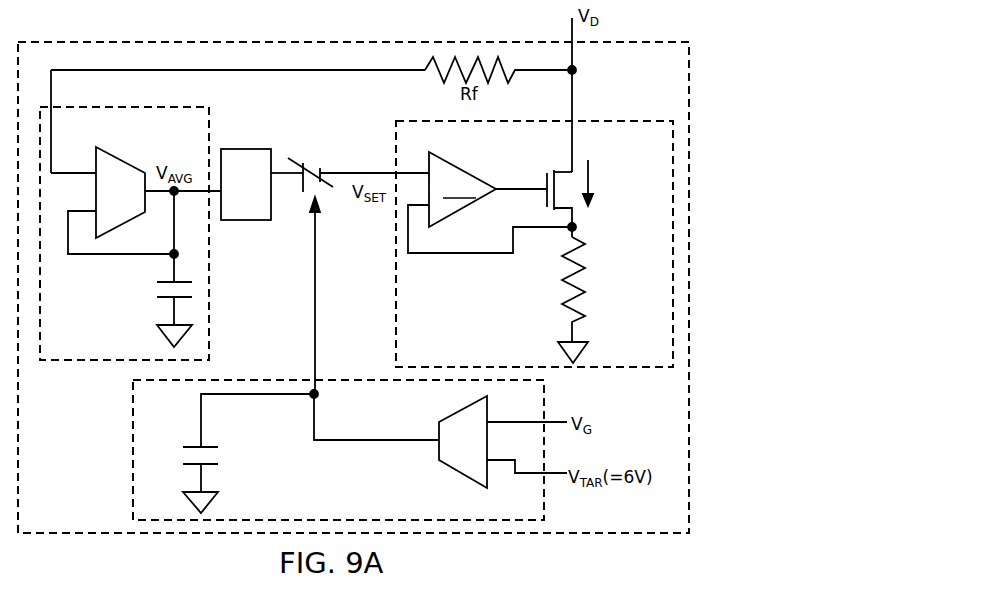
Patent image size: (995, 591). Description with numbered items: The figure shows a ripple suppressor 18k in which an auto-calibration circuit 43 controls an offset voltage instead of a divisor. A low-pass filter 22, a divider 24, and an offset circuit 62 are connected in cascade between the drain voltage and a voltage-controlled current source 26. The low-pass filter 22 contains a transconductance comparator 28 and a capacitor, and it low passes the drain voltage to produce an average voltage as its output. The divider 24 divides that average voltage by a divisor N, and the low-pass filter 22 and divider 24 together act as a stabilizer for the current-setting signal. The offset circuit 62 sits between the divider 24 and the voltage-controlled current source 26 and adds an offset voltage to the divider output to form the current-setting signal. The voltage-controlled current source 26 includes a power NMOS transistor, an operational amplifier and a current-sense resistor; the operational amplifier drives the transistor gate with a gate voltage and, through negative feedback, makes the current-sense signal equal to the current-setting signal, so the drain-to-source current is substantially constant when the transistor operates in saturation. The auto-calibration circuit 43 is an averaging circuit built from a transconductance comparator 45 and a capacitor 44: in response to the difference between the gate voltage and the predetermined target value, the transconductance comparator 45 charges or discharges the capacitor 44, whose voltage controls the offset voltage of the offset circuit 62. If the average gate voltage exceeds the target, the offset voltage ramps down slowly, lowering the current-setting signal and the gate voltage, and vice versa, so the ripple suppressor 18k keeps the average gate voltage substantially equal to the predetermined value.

The ripple suppressor 18k is at (666, 73).
The low-pass filter 22 is at (189, 137).
The divider 24 is at (254, 208).
The voltage-controlled current source 26 is at (650, 159).
The transconductance comparator 28 is at (120, 224).
The auto-calibration circuit 43 is at (537, 406).
The capacitor 44 is at (250, 451).
The transconductance comparator 45 is at (460, 476).
The offset circuit 62 is at (350, 264).